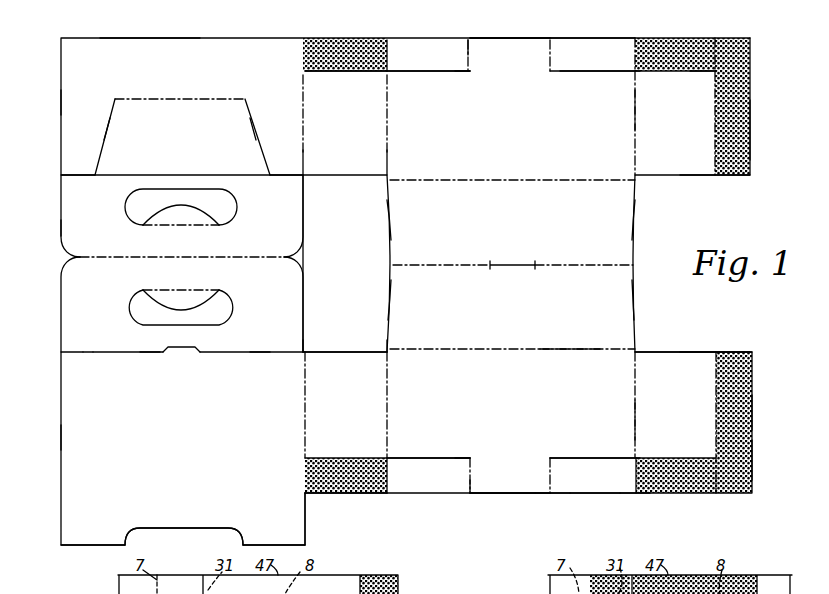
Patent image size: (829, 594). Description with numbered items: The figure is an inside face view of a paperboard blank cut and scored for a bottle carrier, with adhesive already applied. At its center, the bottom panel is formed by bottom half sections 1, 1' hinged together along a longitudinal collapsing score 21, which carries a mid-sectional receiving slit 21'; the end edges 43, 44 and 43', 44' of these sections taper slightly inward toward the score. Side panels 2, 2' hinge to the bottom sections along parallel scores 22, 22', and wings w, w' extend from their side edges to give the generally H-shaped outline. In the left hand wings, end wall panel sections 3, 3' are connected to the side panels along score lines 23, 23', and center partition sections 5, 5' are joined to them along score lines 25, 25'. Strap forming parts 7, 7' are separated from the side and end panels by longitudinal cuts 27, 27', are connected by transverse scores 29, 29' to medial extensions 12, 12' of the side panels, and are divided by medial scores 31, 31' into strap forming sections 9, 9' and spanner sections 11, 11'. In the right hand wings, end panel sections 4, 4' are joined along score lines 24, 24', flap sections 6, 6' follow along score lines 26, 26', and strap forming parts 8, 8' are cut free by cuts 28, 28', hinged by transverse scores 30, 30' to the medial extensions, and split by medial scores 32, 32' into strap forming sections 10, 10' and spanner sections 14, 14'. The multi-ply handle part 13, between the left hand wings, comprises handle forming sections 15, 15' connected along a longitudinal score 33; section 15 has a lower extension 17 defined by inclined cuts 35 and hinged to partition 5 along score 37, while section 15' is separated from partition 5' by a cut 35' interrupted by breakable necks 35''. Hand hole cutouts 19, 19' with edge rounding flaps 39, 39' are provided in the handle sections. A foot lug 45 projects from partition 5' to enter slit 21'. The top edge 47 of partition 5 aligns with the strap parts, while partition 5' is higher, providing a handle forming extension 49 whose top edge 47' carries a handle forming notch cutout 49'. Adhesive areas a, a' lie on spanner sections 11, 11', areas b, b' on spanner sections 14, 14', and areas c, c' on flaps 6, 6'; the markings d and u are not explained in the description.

The bottom half section 1 is at (512, 240).
The bottom half section 1' is at (512, 319).
The side panel 2 is at (510, 88).
The side panel 2' is at (510, 442).
The end wall panel section 3 is at (346, 213).
The end wall panel section 3' is at (345, 405).
The end panel section 4 is at (691, 195).
The end panel section 4' is at (528, 422).
The center partition section 5 is at (405, 106).
The center partition section 5' is at (183, 448).
The flap section 6 is at (745, 106).
The flap section 6' is at (751, 422).
The strap forming part 7 is at (387, 40).
The strap forming part 7' is at (387, 490).
The strap forming part 8 is at (632, 40).
The strap forming part 8' is at (633, 492).
The strap forming section 9 is at (459, 79).
The strap forming section 9' is at (458, 447).
The strap forming section 10 is at (592, 31).
The strap forming section 10' is at (595, 508).
The spanner section 11 is at (345, 65).
The spanner section 11' is at (346, 462).
The medial extension 12 is at (510, 30).
The medial extension 12' is at (502, 515).
The multi-ply handle part 13 is at (58, 233).
The spanner section 14 is at (675, 66).
The spanner section 14' is at (676, 462).
The handle forming section 15 is at (182, 216).
The handle forming section 15' is at (182, 304).
The lower extension 17 is at (180, 140).
The hand hole cutout 19 is at (195, 207).
The hand hole cutout 19' is at (207, 307).
The collapsing score 21 is at (599, 252).
The receiving slit 21' is at (442, 252).
The score 22 is at (512, 168).
The score 22' is at (570, 363).
The score line 23 is at (370, 174).
The score line 23' is at (373, 347).
The score line 24 is at (619, 110).
The score line 24' is at (618, 420).
The score line 25 is at (311, 104).
The score line 25' is at (308, 399).
The score line 26 is at (715, 178).
The score line 26' is at (716, 343).
The longitudinally extending cut 27 is at (428, 83).
The longitudinally extending cut 27' is at (428, 444).
The longitudinally extending cut 28 is at (600, 84).
The longitudinally extending cut 28' is at (595, 448).
The transverse score 29 is at (465, 32).
The transverse score 29' is at (485, 501).
The transverse score 30 is at (539, 40).
The transverse score 30' is at (552, 507).
The medial score 31 is at (372, 40).
The medial score 31' is at (410, 490).
The medial score 32 is at (651, 40).
The medial score 32' is at (635, 508).
The longitudinal score 33 is at (135, 258).
The vertically inclined cut 35 is at (180, 139).
The cut 35' is at (202, 370).
The breakable neck 35'' is at (91, 376).
The longitudinal score 37 is at (158, 99).
The edge rounding flap 39 is at (176, 211).
The edge rounding flap 39' is at (176, 306).
The end edge 43 is at (372, 220).
The end edge 43' is at (372, 300).
The end edge 44 is at (654, 220).
The end edge 44' is at (657, 300).
The foot lug 45 is at (182, 352).
The top edge 47 is at (150, 24).
The top edge 47' is at (191, 551).
The handle forming extension 49 is at (325, 519).
The handle forming notch cutout 49' is at (184, 541).
The area of adhesive a is at (346, 75).
The area of adhesive a' is at (346, 462).
The area of adhesive b is at (702, 77).
The area of adhesive b' is at (647, 462).
The area of adhesive c is at (757, 130).
The area of adhesive c' is at (764, 460).
The glue area d is at (690, 593).
The width dimension u is at (756, 411).
The wing w is at (42, 102).
The wing w' is at (39, 436).